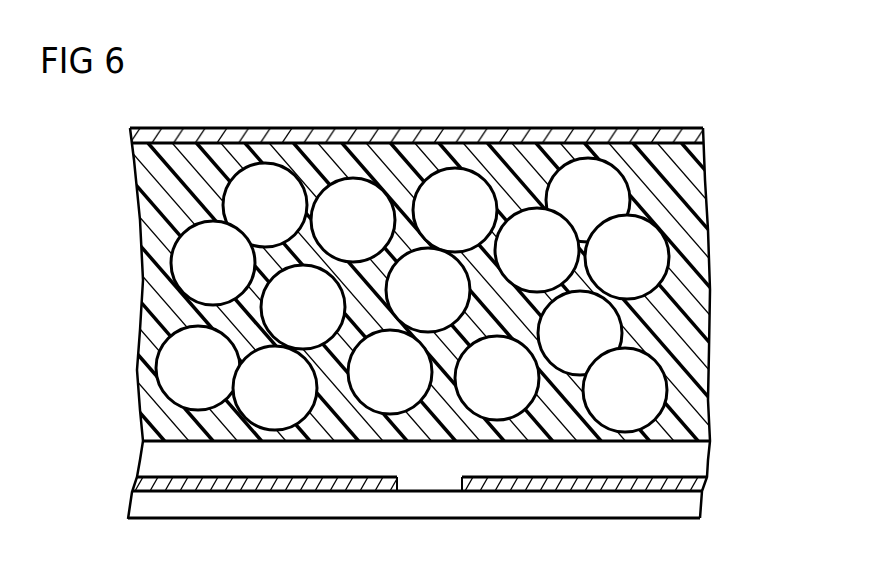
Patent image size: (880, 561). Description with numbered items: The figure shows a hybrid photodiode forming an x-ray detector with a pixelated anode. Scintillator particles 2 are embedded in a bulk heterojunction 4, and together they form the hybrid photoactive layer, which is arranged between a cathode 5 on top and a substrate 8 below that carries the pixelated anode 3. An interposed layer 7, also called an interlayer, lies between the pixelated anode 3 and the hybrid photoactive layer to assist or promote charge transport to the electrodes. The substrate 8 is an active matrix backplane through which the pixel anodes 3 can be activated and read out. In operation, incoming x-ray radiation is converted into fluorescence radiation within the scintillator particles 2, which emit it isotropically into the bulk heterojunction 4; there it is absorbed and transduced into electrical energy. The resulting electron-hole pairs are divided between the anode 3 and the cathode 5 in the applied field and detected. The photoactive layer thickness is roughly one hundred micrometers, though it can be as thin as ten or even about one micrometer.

The scintillator particles 2 is at (657, 260).
The pixelated anode 3 is at (140, 479).
The bulk heterojunction 4 is at (150, 222).
The cathode 5 is at (141, 137).
The interposed layer 7 is at (152, 458).
The substrate 8 is at (142, 503).